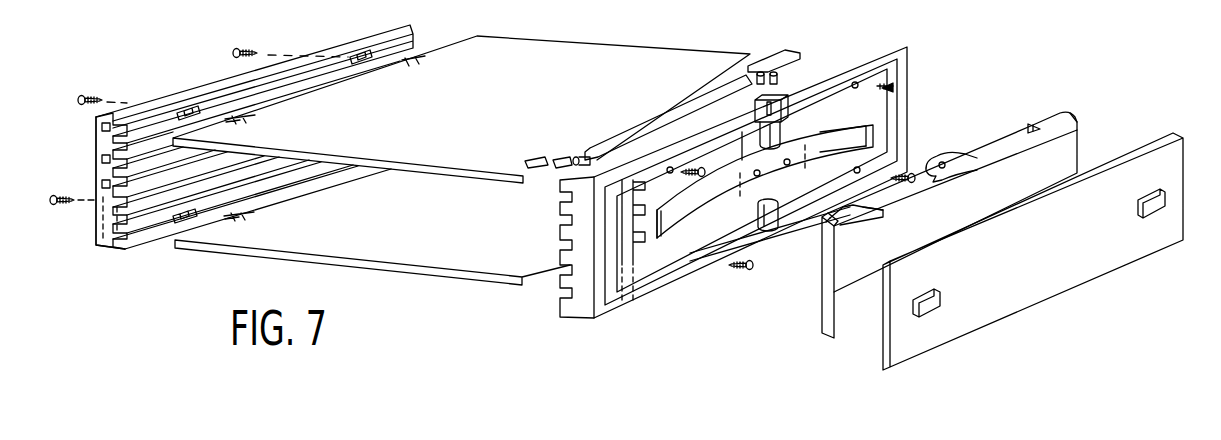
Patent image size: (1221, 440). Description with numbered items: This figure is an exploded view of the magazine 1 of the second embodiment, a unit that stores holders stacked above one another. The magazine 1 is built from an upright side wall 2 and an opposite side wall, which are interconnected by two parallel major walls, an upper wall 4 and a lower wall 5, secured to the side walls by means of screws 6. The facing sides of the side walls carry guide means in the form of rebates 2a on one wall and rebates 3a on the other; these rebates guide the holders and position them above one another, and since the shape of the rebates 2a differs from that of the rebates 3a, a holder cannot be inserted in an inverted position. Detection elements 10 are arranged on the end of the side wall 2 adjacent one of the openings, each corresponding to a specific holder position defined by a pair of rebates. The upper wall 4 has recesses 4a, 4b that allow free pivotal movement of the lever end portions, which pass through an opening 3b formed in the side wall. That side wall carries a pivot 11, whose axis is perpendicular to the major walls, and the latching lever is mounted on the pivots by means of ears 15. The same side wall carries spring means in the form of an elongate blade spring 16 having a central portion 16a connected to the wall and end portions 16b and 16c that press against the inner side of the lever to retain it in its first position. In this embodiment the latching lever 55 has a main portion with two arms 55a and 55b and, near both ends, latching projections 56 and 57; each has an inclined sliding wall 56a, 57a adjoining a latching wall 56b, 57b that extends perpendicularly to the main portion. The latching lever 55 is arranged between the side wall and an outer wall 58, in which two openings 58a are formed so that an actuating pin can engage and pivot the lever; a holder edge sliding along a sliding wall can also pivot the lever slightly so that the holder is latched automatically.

The magazine 1 is at (668, 37).
The side wall 2 is at (199, 89).
The rebates 2a is at (128, 124).
The rebates 3a is at (573, 190).
The opening 3b is at (630, 267).
The upper wall 4 is at (528, 56).
The recess 4a is at (530, 161).
The recess 4b is at (748, 53).
The lower wall 5 is at (367, 267).
The screws 6 is at (243, 52).
The detection elements 10 is at (97, 183).
The pivot 11 is at (752, 108).
The ears 15 is at (957, 158).
The blade spring 16 is at (815, 152).
The central portion 16a is at (751, 184).
The end portion 16b is at (660, 233).
The end portion 16c is at (855, 138).
The latching lever 55 is at (963, 221).
The arm 55a is at (840, 337).
The arm 55b is at (1063, 147).
The latching projection 56 is at (822, 250).
The sliding wall 56a is at (833, 215).
The latching wall 56b is at (877, 208).
The latching projection 57 is at (1060, 119).
The sliding wall 57a is at (1063, 115).
The latching wall 57b is at (1028, 128).
The outer wall 58 is at (1037, 293).
The openings 58a is at (925, 293).